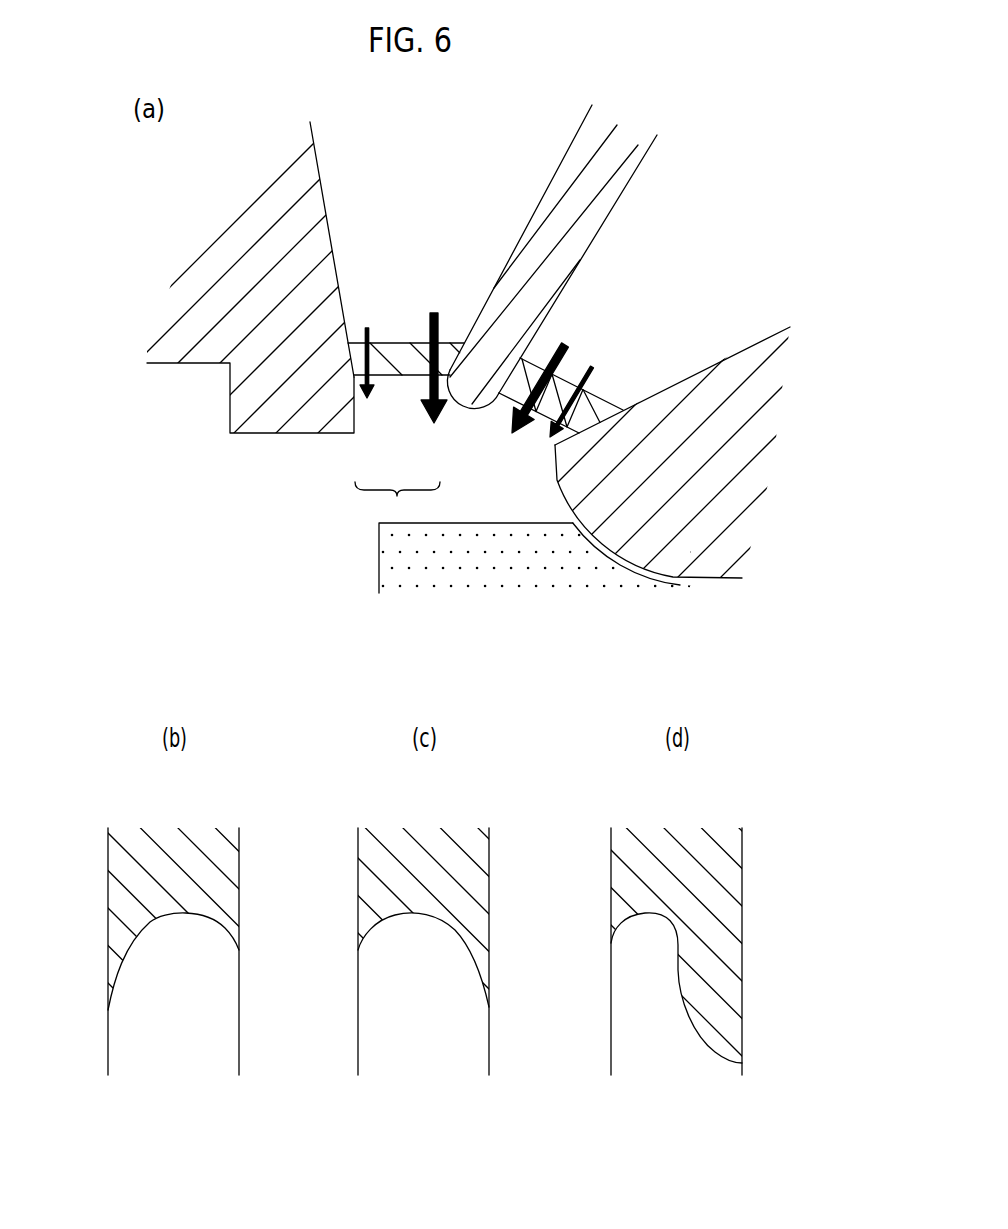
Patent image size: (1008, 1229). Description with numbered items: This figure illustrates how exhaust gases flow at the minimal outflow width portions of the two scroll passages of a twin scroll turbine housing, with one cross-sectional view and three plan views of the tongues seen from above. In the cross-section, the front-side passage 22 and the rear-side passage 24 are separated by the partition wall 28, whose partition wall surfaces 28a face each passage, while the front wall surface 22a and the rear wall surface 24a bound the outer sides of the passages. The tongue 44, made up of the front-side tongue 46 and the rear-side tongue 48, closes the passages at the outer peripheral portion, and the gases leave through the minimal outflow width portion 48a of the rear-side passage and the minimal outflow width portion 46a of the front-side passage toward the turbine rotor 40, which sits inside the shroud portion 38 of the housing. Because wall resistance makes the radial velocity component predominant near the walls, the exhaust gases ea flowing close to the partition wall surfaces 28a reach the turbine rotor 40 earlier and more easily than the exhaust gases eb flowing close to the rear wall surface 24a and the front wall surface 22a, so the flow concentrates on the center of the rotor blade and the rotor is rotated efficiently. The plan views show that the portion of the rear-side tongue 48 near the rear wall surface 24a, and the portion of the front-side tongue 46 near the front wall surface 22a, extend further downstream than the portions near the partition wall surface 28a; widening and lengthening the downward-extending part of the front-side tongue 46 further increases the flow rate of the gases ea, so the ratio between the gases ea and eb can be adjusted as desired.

The front-side passage 22 is at (717, 253).
The front wall surface 22a is at (747, 348).
The rear-side passage 24 is at (437, 211).
The rear wall surface 24a is at (324, 200).
The partition wall 28 is at (568, 272).
The partition wall surface 28a is at (552, 180).
The shroud portion 38 is at (703, 533).
The turbine rotor 40 is at (505, 563).
The tongue 44 is at (397, 503).
The front-side tongue 46 is at (540, 425).
The minimal outflow width portion of the front-side passage 46a is at (573, 380).
The rear-side tongue 48 is at (393, 378).
The minimal outflow width portion of the rear-side passage 48a is at (403, 340).
The exhaust gas flowing close to the partition wall surface ea is at (434, 310).
The exhaust gas flowing close to the rear wall surface and front wall surface eb is at (367, 325).